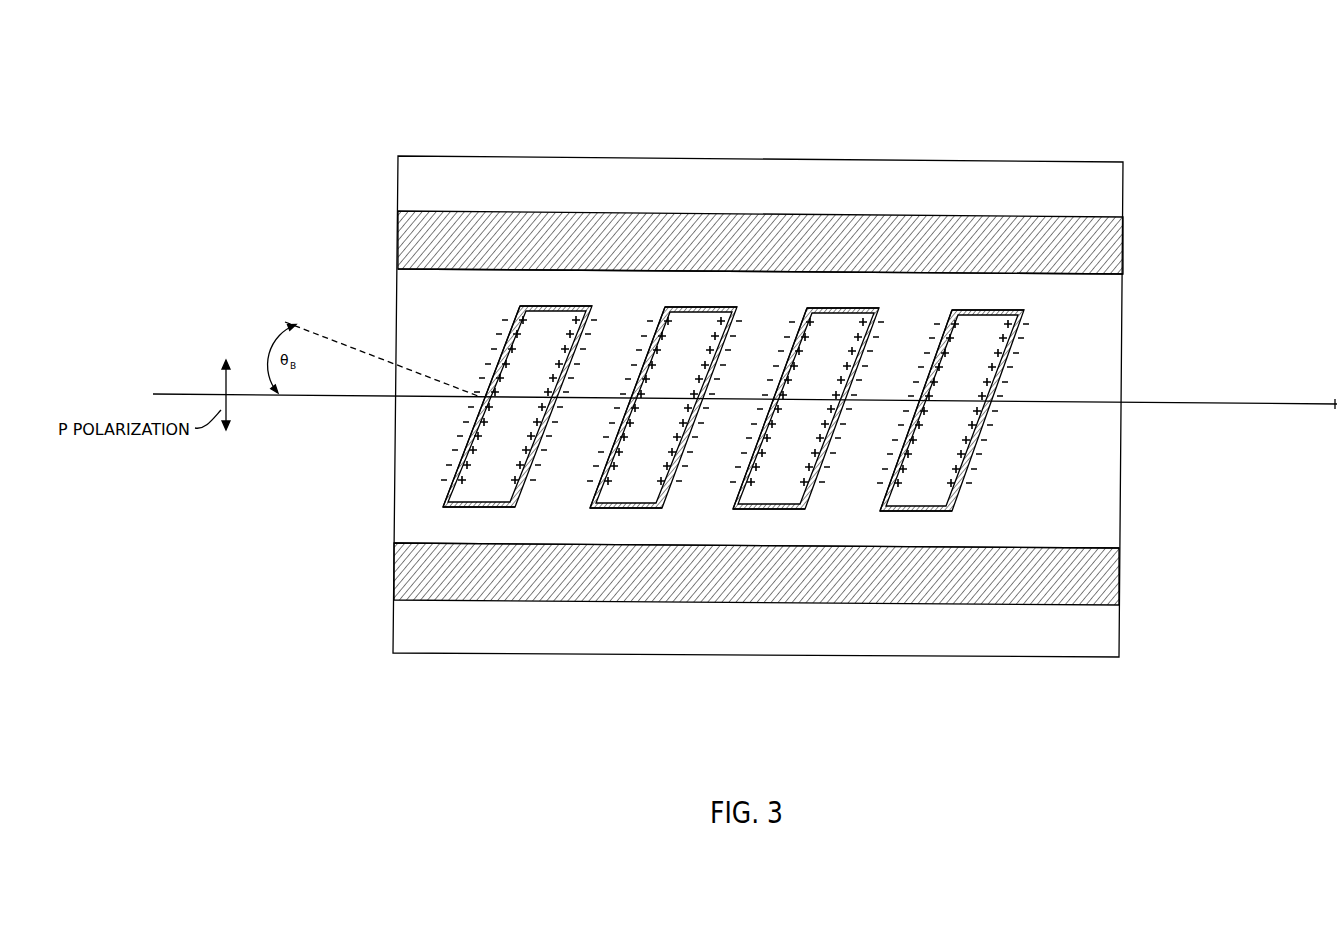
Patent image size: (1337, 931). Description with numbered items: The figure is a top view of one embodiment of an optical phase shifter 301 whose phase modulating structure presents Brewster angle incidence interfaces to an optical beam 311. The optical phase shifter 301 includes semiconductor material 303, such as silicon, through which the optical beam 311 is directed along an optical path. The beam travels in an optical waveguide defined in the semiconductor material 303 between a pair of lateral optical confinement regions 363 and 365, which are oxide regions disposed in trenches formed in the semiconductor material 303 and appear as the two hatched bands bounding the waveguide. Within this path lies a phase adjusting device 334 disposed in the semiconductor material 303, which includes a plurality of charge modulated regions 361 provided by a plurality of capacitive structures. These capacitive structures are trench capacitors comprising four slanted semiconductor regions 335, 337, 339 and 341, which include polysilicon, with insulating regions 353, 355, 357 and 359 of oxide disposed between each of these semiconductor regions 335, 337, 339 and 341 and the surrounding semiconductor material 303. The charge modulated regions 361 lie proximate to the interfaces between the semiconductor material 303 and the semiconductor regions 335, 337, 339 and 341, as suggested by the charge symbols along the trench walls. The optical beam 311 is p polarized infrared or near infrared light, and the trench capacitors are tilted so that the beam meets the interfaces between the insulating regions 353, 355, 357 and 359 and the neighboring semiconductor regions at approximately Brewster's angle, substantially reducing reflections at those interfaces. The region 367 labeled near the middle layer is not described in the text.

The optical phase shifter 301 is at (1140, 94).
The semiconductor material 303 is at (1120, 192).
The optical beam 311 is at (173, 391).
The phase adjusting device 334 is at (1058, 325).
The semiconductor region 335 is at (480, 493).
The semiconductor region 337 is at (627, 494).
The semiconductor region 339 is at (770, 495).
The semiconductor region 341 is at (916, 497).
The insulating region 353 is at (447, 507).
The insulating region 355 is at (590, 508).
The insulating region 357 is at (733, 509).
The insulating region 359 is at (880, 511).
The charge modulated regions 361 is at (594, 311).
The lateral optical confinement region 363 is at (1122, 247).
The lateral optical confinement region 365 is at (1116, 588).
The electro-optic medium region 367 is at (1120, 351).